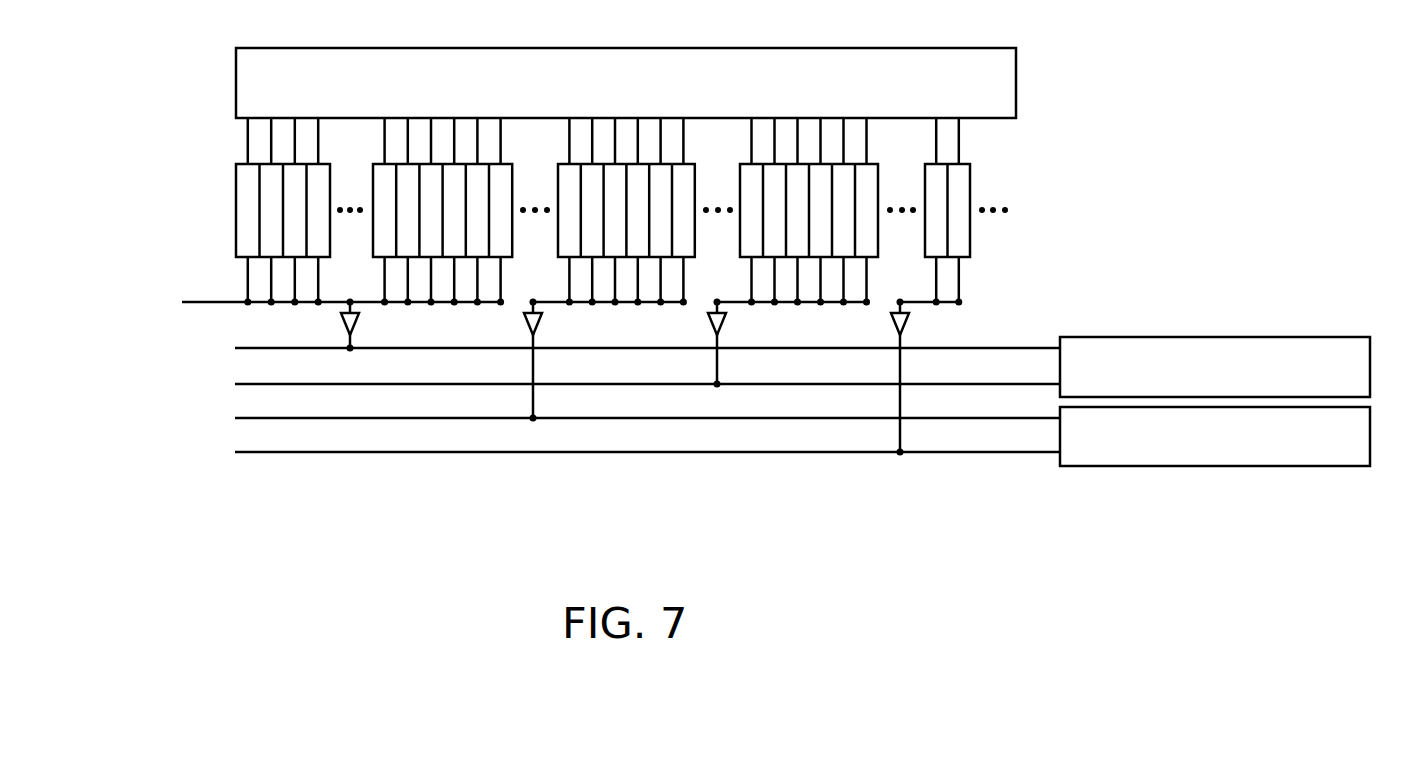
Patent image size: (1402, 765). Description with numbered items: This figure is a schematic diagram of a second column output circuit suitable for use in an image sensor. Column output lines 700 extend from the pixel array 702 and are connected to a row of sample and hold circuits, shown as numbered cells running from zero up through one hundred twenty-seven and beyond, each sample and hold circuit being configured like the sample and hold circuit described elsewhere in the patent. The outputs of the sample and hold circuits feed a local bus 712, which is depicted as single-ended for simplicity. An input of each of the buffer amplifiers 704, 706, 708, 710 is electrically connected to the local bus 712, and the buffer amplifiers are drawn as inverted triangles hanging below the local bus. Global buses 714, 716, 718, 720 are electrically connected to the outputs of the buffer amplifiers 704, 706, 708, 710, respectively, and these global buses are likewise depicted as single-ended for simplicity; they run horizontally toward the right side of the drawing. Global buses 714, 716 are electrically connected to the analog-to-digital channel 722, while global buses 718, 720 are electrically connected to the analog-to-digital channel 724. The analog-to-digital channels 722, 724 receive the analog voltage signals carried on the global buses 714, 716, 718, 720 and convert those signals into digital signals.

The column output lines 700 is at (236, 135).
The pixel array 702 is at (596, 95).
The buffer amplifier 704 is at (342, 318).
The buffer amplifier 706 is at (524, 318).
The buffer amplifier 708 is at (708, 319).
The buffer amplifier 710 is at (892, 319).
The local bus 712 is at (173, 289).
The global bus 714 is at (214, 344).
The global bus 716 is at (215, 383).
The global bus 718 is at (214, 428).
The global bus 720 is at (222, 472).
The analog-to-digital channel 722 is at (1196, 385).
The analog-to-digital channel 724 is at (1196, 455).